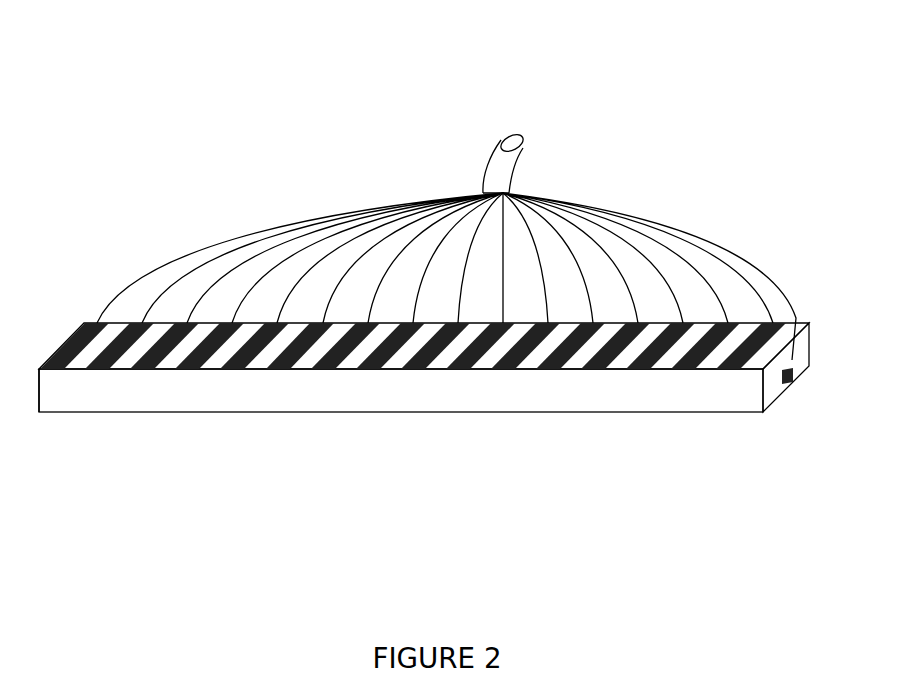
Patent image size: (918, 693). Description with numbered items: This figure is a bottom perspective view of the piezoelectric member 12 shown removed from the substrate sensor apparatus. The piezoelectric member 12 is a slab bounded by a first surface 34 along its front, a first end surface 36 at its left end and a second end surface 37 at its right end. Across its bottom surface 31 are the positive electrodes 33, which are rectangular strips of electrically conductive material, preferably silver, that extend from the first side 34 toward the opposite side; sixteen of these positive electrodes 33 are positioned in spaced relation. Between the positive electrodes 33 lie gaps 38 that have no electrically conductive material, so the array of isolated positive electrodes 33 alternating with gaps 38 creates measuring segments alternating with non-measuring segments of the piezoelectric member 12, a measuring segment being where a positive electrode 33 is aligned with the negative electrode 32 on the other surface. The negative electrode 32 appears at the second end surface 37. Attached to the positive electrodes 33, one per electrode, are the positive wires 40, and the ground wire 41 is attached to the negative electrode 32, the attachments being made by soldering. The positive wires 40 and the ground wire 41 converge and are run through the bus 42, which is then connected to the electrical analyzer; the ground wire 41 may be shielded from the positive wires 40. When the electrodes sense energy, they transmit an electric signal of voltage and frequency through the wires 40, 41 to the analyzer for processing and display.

The piezoelectric member 12 is at (587, 89).
The bottom surface 31 is at (307, 360).
The negative electrode 32 is at (790, 383).
The positive electrodes 33 is at (70, 348).
The first surface 34 is at (445, 393).
The first end surface 36 is at (39, 390).
The second end surface 37 is at (770, 388).
The gaps 38 is at (528, 362).
The positive wires 40 is at (160, 257).
The ground wire 41 is at (747, 250).
The bus 42 is at (503, 167).